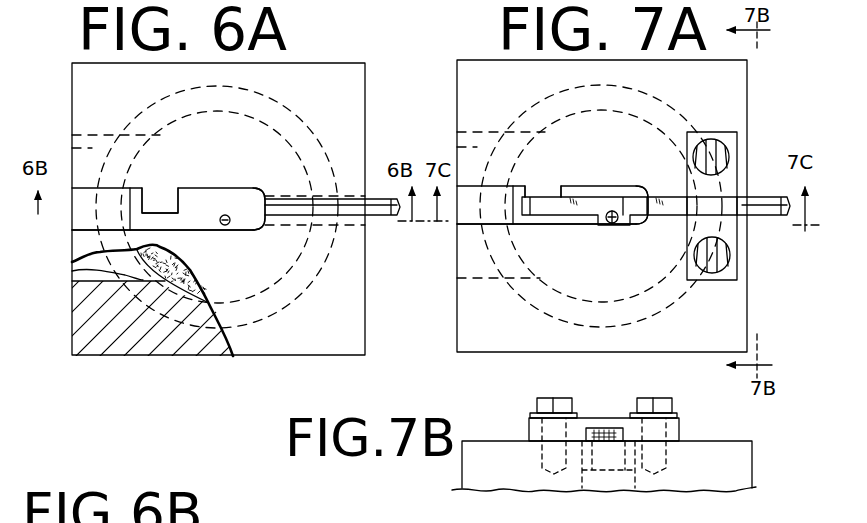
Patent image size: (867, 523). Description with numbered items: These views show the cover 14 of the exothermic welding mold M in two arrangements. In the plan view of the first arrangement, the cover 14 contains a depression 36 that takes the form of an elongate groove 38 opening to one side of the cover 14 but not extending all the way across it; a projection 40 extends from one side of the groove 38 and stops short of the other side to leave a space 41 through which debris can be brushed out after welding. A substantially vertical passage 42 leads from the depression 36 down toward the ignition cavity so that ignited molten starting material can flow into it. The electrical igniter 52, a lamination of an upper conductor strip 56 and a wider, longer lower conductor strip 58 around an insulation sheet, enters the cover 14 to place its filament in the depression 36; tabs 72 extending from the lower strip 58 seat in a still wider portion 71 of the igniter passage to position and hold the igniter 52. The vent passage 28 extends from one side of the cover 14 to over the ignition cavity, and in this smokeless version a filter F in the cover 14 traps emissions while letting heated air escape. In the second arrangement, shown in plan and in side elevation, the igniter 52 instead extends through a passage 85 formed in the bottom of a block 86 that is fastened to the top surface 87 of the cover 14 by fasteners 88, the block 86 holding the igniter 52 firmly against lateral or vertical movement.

In FIG. 6A, the cover 14 is at (72, 95).
In FIG. 7A, the cover 14 is at (457, 86).
In FIG. 6A, the vent passage 28 is at (72, 148).
In FIG. 7A, the vent passage 28 is at (457, 147).
In FIG. 6A, the depression 36 is at (237, 198).
In FIG. 7A, the depression 36 is at (612, 192).
In FIG. 7B, the depression 36 is at (640, 478).
In FIG. 6A, the elongate groove 38 is at (131, 197).
In FIG. 7A, the elongate groove 38 is at (513, 193).
In FIG. 6A, the projection 40 is at (162, 196).
In FIG. 7A, the projection 40 is at (547, 192).
In FIG. 6A, the space 41 is at (167, 222).
In FIG. 7A, the space 41 is at (547, 220).
In FIG. 6A, the vertical passage 42 is at (225, 226).
In FIG. 7A, the vertical passage 42 is at (612, 224).
In FIG. 6A, the electrical igniter 52 is at (376, 194).
In FIG. 7A, the electrical igniter 52 is at (757, 191).
In FIG. 6A, the upper conductor strip 56 is at (382, 212).
In FIG. 7A, the upper conductor strip 56 is at (770, 218).
In FIG. 6A, the lower conductor strip 58 is at (372, 222).
In FIG. 7A, the lower conductor strip 58 is at (762, 222).
In FIG. 6A, the still wider portion 71 is at (302, 190).
In FIG. 7A, the tabs 72 is at (683, 178).
In FIG. 7A, the passage 85 is at (686, 238).
In FIG. 7B, the passage 85 is at (588, 428).
In FIG. 7A, the block 86 is at (728, 238).
In FIG. 7B, the block 86 is at (679, 427).
In FIG. 7A, the top surface 87 is at (688, 100).
In FIG. 7B, the top surface 87 is at (752, 441).
In FIG. 7A, the fasteners 88 is at (714, 150).
In FIG. 7B, the fasteners 88 is at (537, 400).
In FIG. 6A, the filter F is at (72, 272).
In FIG. 6A, the mold M is at (70, 318).
In FIG. 7A, the mold M is at (455, 301).